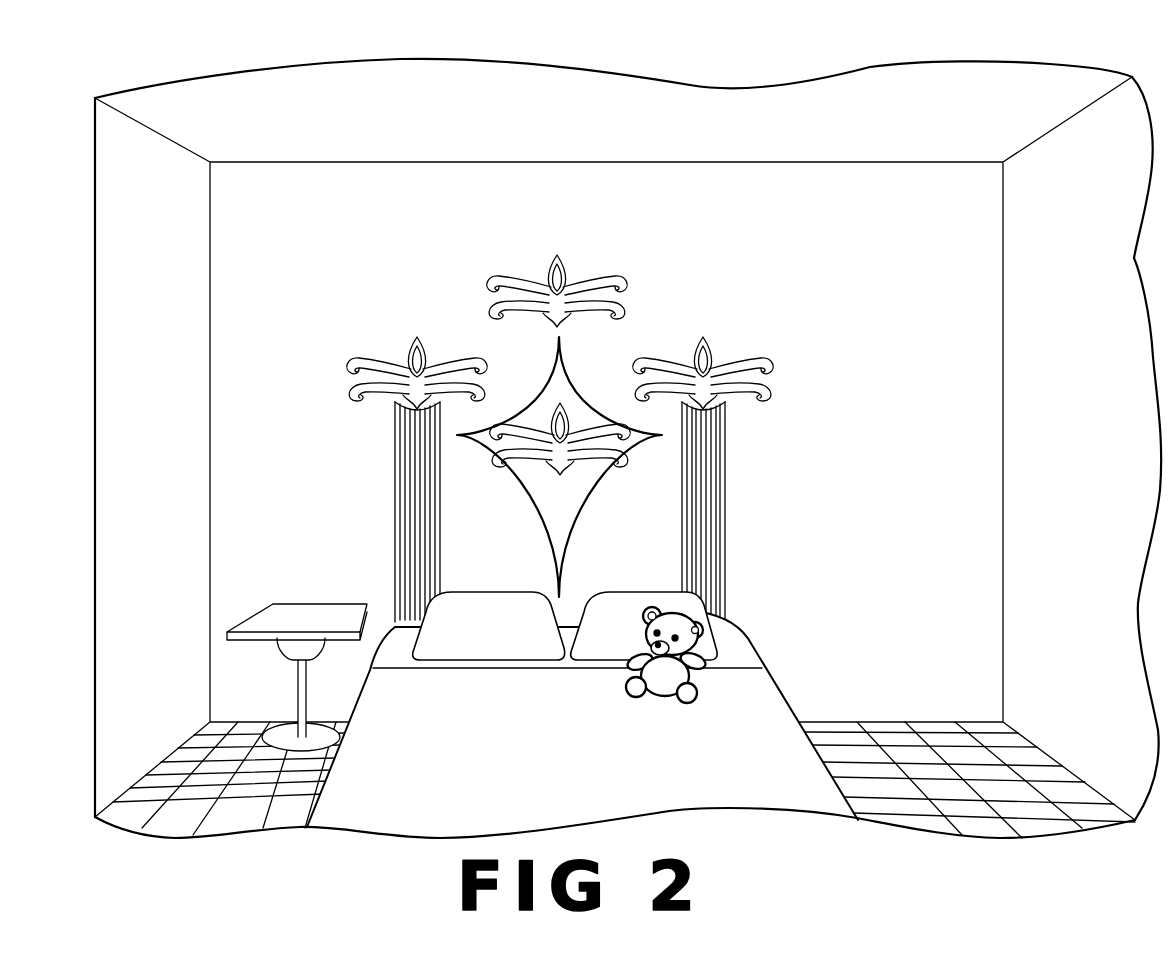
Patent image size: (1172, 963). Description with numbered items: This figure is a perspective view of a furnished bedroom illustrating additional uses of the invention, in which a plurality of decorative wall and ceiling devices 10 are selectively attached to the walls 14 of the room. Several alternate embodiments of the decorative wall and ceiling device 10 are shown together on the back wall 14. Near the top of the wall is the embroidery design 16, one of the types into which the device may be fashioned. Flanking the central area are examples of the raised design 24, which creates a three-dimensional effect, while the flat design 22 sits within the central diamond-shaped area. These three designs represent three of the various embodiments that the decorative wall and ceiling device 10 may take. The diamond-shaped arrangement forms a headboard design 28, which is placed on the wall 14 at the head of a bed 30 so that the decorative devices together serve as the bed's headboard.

The decorative wall and ceiling device 10 is at (400, 293).
The wall 14 is at (268, 182).
The embroidery design 16 is at (573, 268).
The flat design 22 is at (588, 450).
The raised design 24 is at (773, 358).
The headboard design 28 is at (565, 210).
The bed 30 is at (748, 707).